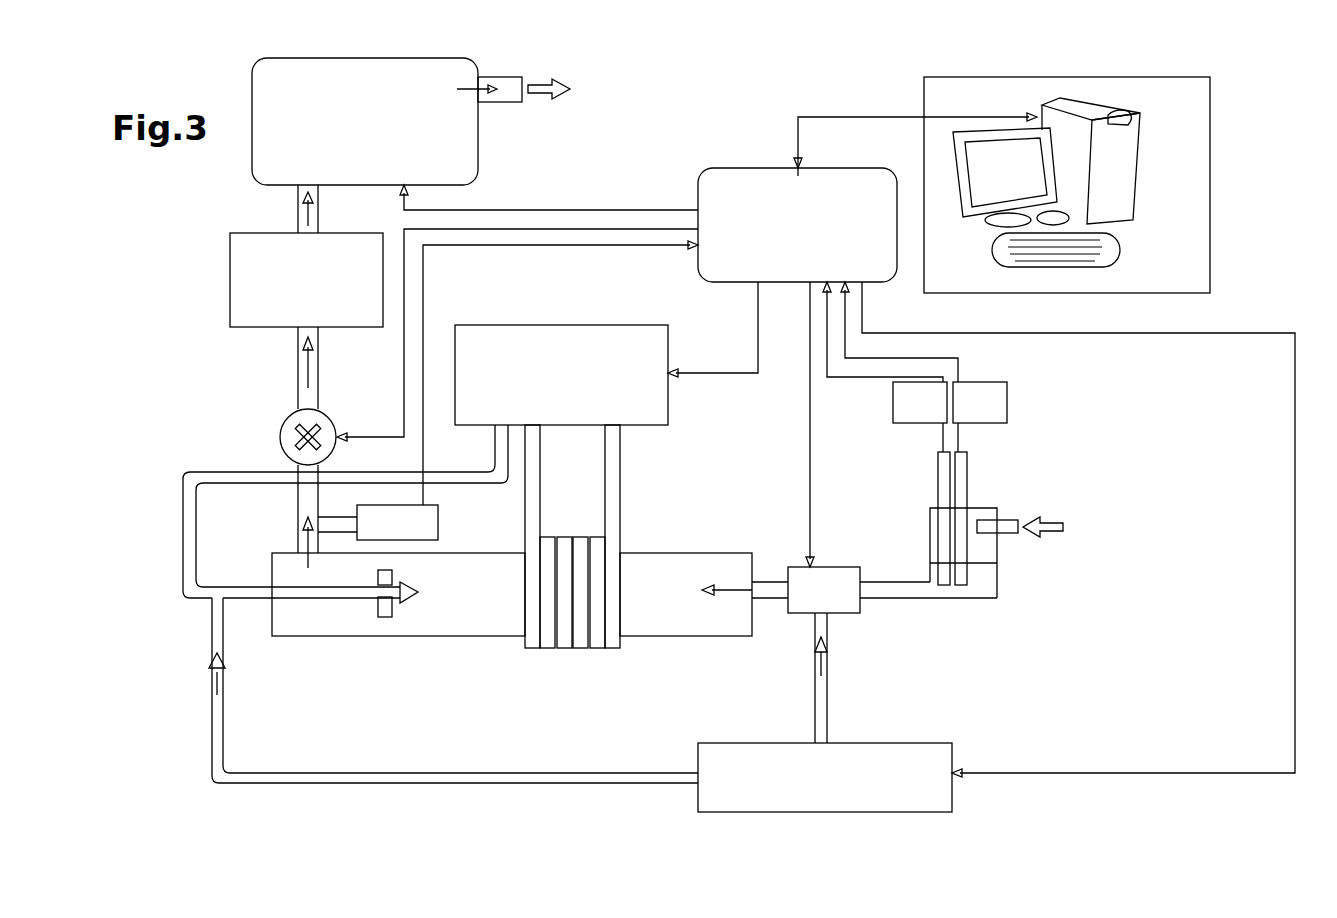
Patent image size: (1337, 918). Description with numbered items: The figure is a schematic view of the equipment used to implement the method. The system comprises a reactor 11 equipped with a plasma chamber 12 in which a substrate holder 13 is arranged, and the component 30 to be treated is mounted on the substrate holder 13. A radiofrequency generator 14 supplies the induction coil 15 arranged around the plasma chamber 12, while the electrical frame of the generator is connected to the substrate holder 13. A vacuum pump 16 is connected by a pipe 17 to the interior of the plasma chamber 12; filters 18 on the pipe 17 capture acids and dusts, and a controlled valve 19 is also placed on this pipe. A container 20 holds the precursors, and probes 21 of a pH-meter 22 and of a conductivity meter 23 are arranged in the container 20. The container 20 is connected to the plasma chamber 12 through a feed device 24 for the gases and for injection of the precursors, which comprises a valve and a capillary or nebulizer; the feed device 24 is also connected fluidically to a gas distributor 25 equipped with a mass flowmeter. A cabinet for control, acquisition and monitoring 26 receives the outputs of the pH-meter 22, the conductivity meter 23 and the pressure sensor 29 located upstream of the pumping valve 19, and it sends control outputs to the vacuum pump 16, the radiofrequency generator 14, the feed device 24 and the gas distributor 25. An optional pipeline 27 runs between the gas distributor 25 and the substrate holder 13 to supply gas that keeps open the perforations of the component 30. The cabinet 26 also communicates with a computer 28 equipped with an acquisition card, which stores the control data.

The reactor 11 is at (669, 515).
The plasma chamber 12 is at (704, 594).
The substrate holder 13 is at (398, 594).
The radiofrequency generator 14 is at (425, 461).
The induction coil 15 is at (578, 652).
The vacuum pump 16 is at (411, 121).
The pipe 17 is at (298, 368).
The filters 18 is at (306, 256).
The controlled valve 19 is at (282, 420).
The container 20 is at (990, 508).
The probes 21 is at (938, 492).
The pH-meter 22 is at (920, 417).
The conductivity meter 23 is at (980, 417).
The feed device 24 is at (838, 567).
The gas distributor 25 is at (825, 712).
The control cabinet 26 is at (816, 445).
The pipeline 27 is at (370, 771).
The computer 28 is at (1210, 230).
The pressure sensor 29 is at (508, 390).
The component 30 is at (392, 606).